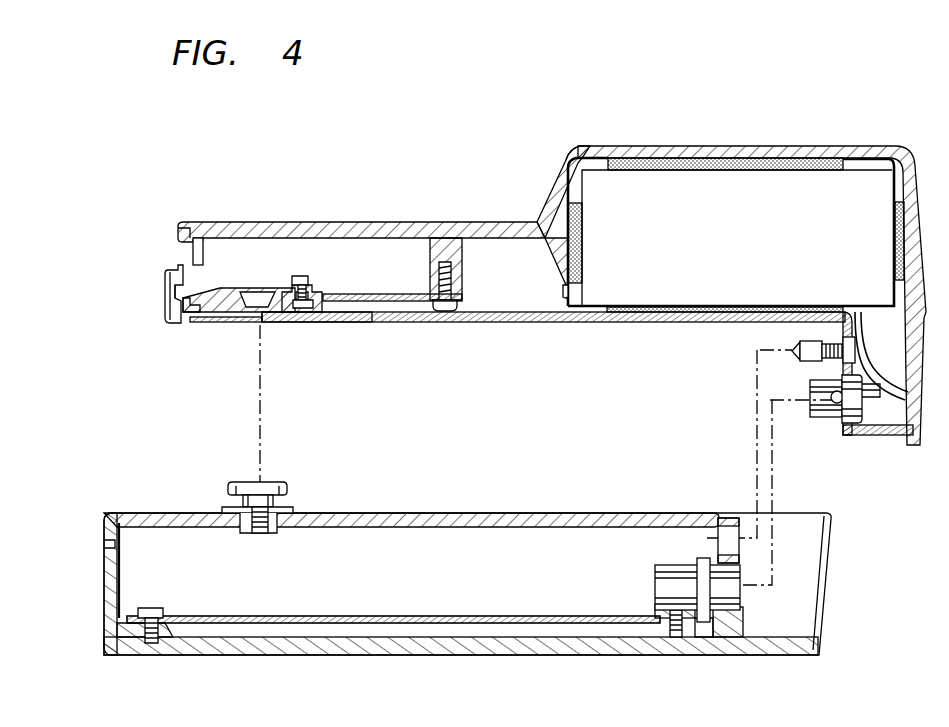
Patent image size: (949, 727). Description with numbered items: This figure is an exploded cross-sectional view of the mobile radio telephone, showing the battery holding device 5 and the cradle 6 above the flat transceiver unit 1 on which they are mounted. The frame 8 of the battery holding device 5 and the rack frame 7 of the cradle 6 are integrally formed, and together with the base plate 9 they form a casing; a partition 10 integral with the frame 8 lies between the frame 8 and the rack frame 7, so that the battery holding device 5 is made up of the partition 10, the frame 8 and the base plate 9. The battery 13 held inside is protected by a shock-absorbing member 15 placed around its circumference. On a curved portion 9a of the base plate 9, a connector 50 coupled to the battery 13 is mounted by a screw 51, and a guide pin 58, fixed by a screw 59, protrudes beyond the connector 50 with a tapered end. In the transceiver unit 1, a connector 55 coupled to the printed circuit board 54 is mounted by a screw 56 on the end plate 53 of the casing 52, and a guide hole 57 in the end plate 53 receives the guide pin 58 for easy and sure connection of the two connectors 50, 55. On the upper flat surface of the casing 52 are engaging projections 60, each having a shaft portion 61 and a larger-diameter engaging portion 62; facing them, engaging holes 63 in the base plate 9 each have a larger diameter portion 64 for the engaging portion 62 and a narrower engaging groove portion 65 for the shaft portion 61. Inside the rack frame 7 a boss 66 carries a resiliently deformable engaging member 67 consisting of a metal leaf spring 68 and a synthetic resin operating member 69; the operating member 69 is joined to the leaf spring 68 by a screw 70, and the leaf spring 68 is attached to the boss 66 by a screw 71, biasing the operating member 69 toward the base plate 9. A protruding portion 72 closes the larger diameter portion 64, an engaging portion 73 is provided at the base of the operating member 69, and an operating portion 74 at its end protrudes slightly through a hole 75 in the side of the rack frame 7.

The transceiver unit 1 is at (467, 608).
The battery holding device 5 is at (846, 146).
The cradle 6 is at (203, 222).
The rack frame 7 is at (262, 222).
The frame 8 is at (612, 146).
The base plate 9 is at (540, 322).
The curved portion 9a is at (838, 334).
The partition 10 is at (557, 232).
The battery 13 is at (667, 172).
The shock-absorbing member 15 is at (573, 210).
The connector 50 is at (840, 421).
The screw 51 is at (832, 402).
The casing 52 is at (528, 657).
The end plate 53 is at (738, 637).
The printed circuit board 54 is at (482, 623).
The connector 55 is at (740, 602).
The screw 56 is at (677, 638).
The guide hole 57 is at (738, 540).
The guide pin 58 is at (800, 366).
The screw 59 is at (812, 349).
The engaging projection 60 is at (267, 490).
The shaft portion 61 is at (275, 498).
The engaging portion 62 is at (280, 485).
The engaging hole 63 is at (283, 308).
The larger diameter portion 64 is at (281, 318).
The engaging groove portion 65 is at (372, 322).
The boss 66 is at (452, 238).
The engaging member 67 is at (200, 322).
The leaf spring 68 is at (362, 294).
The operating member 69 is at (212, 296).
The screw 70 is at (302, 280).
The screw 71 is at (446, 311).
The protruding portion 72 is at (241, 316).
The engaging portion 73 is at (318, 308).
The operating portion 74 is at (165, 292).
The hole 75 is at (190, 250).